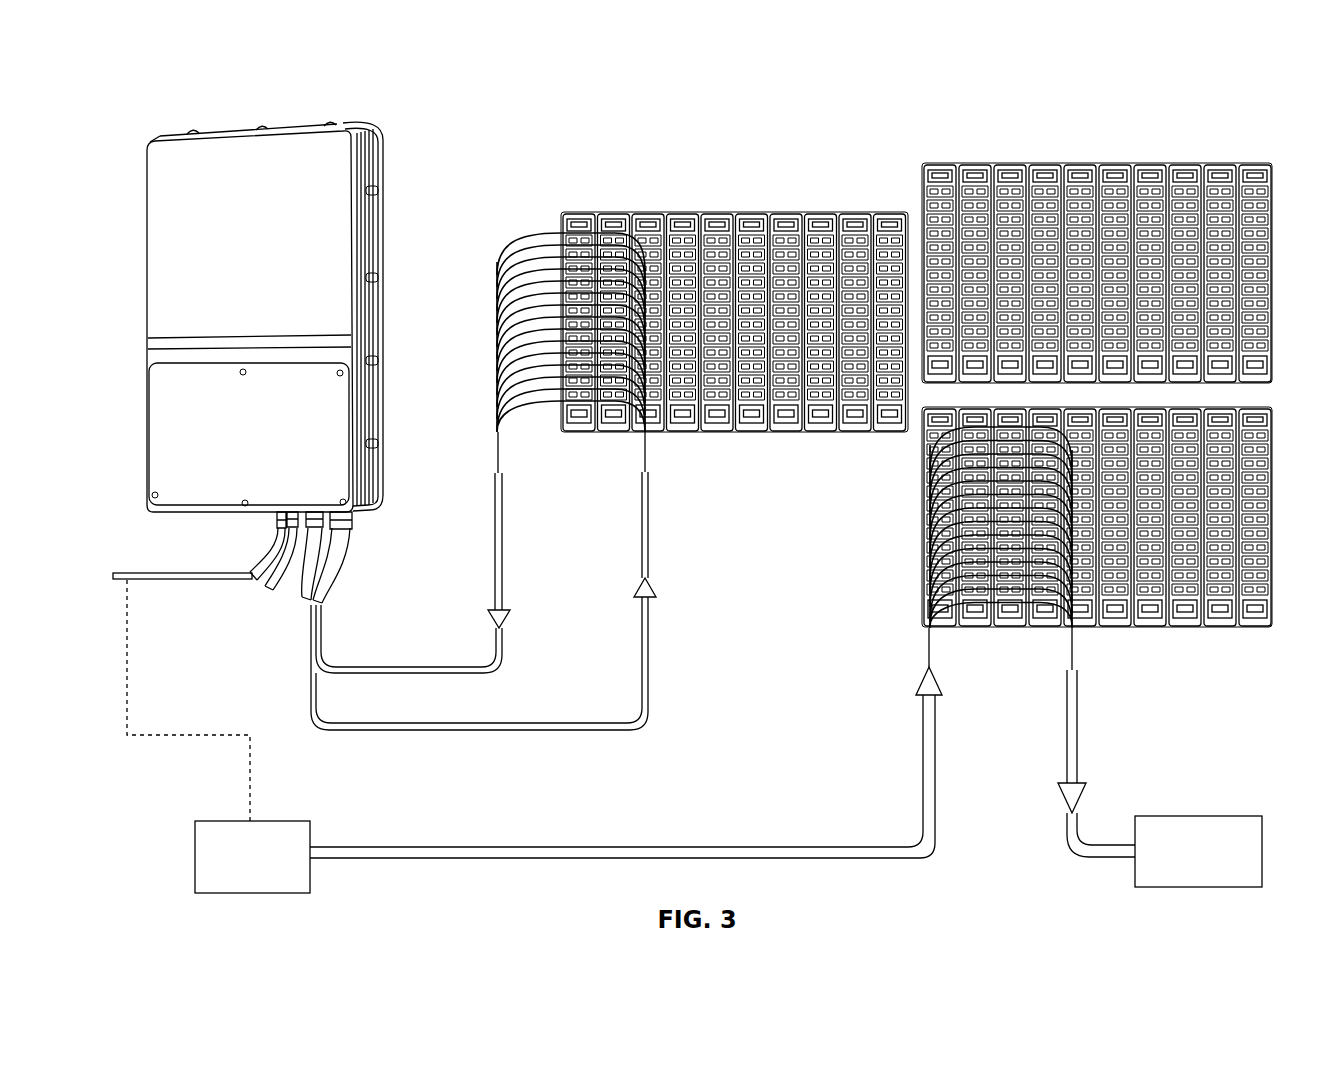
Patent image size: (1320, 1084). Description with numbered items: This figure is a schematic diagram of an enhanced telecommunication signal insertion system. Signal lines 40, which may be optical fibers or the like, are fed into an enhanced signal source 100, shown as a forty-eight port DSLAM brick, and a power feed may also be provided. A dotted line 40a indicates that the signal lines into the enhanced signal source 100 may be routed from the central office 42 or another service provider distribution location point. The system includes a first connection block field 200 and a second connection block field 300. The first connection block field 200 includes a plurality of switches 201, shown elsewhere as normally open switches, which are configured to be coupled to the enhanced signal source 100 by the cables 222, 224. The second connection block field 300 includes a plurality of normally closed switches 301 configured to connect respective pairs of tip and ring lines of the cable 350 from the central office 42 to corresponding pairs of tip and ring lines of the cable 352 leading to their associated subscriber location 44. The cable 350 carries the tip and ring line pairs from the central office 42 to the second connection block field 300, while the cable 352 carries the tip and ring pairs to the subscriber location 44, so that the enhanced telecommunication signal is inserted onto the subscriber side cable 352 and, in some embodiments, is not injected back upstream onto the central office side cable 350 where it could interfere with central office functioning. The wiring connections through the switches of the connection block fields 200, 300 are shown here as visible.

The enhanced signal source 100 is at (383, 157).
The signal lines 40 is at (162, 573).
The dotted line 40a is at (180, 735).
The central office 42 is at (245, 821).
The subscriber location 44 is at (1187, 816).
The first connection block field 200 is at (714, 270).
The switches 201 is at (750, 228).
The cable 222 is at (503, 567).
The cable 224 is at (653, 620).
The second connection block field 300 is at (1097, 415).
The normally closed switches 301 is at (1110, 603).
The cable 350 is at (921, 782).
The cable 352 is at (1100, 843).